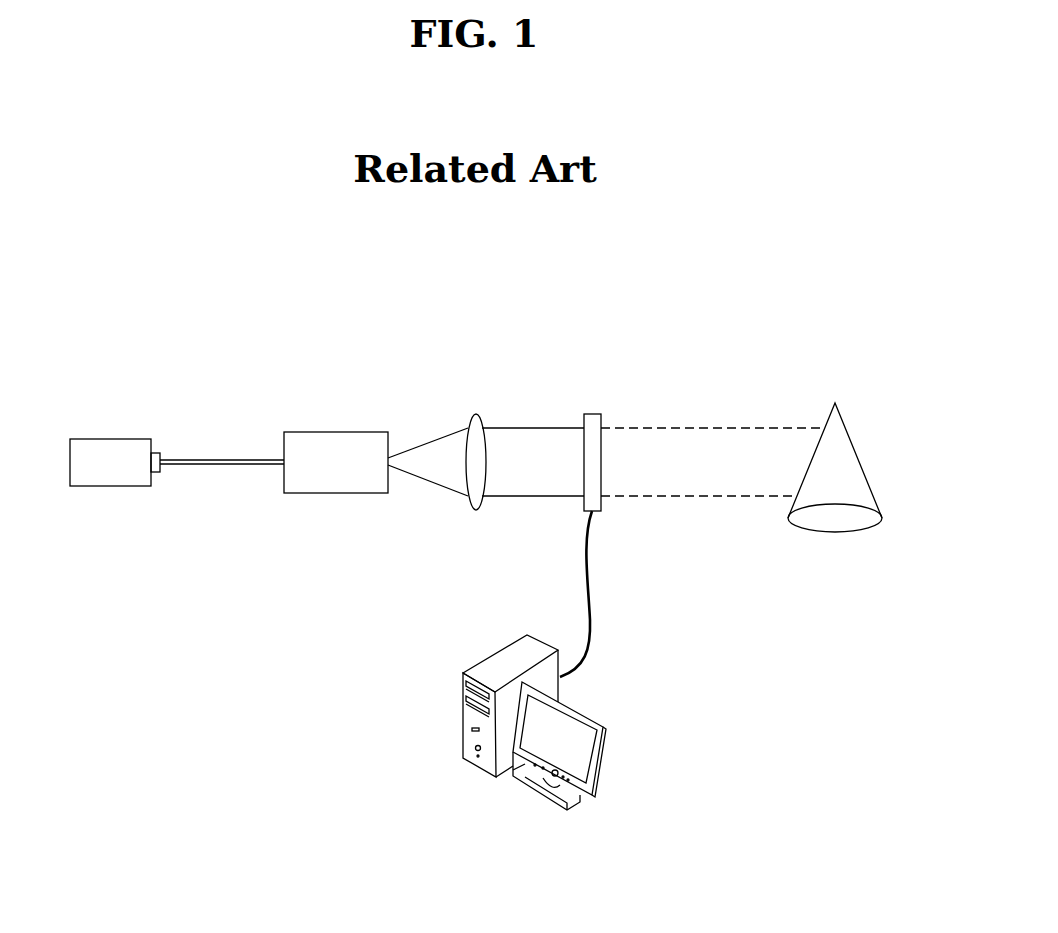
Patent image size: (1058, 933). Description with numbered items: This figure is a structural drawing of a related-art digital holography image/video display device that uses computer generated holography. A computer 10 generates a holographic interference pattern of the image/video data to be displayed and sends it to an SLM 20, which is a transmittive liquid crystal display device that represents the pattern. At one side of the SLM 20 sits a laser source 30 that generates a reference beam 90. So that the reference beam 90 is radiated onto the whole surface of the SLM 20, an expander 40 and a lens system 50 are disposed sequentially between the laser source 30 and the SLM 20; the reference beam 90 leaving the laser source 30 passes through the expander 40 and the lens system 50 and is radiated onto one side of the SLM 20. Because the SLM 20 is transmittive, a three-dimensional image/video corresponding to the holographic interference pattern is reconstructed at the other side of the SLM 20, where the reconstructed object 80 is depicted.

The computer 10 is at (462, 712).
The SLM 20 is at (592, 412).
The laser source 30 is at (110, 487).
The expander 40 is at (337, 494).
The lens system 50 is at (474, 512).
The object (cone) 80 is at (836, 533).
The reference beam 90 is at (193, 455).